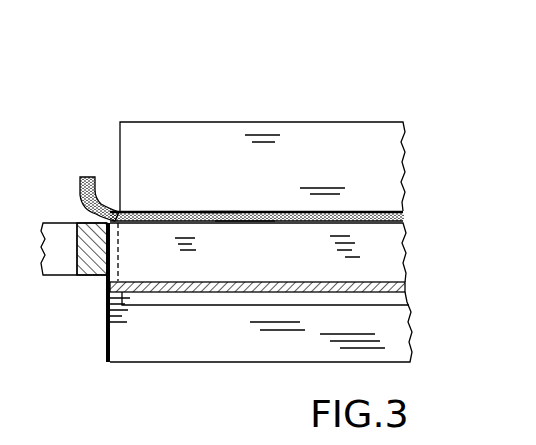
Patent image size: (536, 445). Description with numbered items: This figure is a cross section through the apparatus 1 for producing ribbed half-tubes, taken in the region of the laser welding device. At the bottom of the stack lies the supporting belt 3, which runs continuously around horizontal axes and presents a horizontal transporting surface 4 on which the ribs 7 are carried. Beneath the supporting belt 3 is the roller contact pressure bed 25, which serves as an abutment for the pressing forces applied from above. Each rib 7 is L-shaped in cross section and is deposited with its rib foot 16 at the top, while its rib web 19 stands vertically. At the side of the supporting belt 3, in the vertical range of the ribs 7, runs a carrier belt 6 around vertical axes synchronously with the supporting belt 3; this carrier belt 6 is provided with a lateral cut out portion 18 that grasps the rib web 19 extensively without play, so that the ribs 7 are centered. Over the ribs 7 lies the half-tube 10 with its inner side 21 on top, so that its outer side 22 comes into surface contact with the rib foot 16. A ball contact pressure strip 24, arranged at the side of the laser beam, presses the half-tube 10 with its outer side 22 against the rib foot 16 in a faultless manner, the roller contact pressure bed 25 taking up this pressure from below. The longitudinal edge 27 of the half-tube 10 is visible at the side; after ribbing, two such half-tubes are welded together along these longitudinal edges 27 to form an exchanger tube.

The apparatus 1 is at (241, 108).
The ball contact pressure strip 24 is at (346, 130).
The half-tube 10 is at (165, 206).
The longitudinal edge 27 is at (89, 173).
The inner side 21 is at (216, 208).
The outer side 22 is at (228, 226).
The rib foot 16 is at (256, 224).
The rib 7 is at (392, 251).
The rib web 19 is at (349, 265).
The lateral cut out portion 18 is at (120, 247).
The horizontal transporting surface 4 is at (294, 279).
The supporting belt 3 is at (184, 297).
The roller contact pressure bed 25 is at (248, 367).
The carrier belt 6 is at (82, 284).